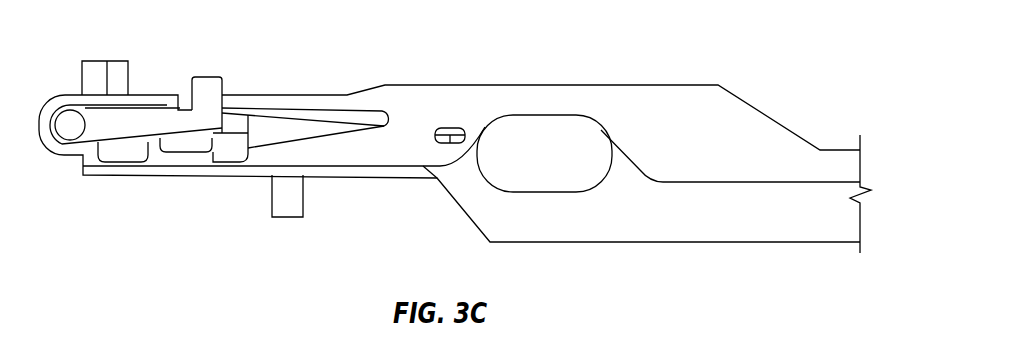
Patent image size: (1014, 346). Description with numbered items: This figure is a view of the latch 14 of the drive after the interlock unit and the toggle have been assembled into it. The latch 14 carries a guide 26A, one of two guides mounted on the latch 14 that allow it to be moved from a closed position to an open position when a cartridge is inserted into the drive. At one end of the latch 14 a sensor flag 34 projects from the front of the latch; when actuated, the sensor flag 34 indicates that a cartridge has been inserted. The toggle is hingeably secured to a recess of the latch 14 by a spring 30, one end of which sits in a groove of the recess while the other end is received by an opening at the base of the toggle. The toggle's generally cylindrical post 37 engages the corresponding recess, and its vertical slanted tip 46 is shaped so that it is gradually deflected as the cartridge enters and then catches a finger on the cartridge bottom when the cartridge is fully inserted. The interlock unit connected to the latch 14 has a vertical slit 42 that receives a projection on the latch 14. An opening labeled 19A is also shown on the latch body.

The body 14 is at (690, 102).
The block 26A is at (120, 67).
The stop block 37 is at (218, 77).
The wedge spring 30 is at (256, 108).
The pivot pin 46 is at (68, 135).
The retainer 42 is at (230, 147).
The tab 34 is at (290, 210).
The opening 19A is at (558, 169).